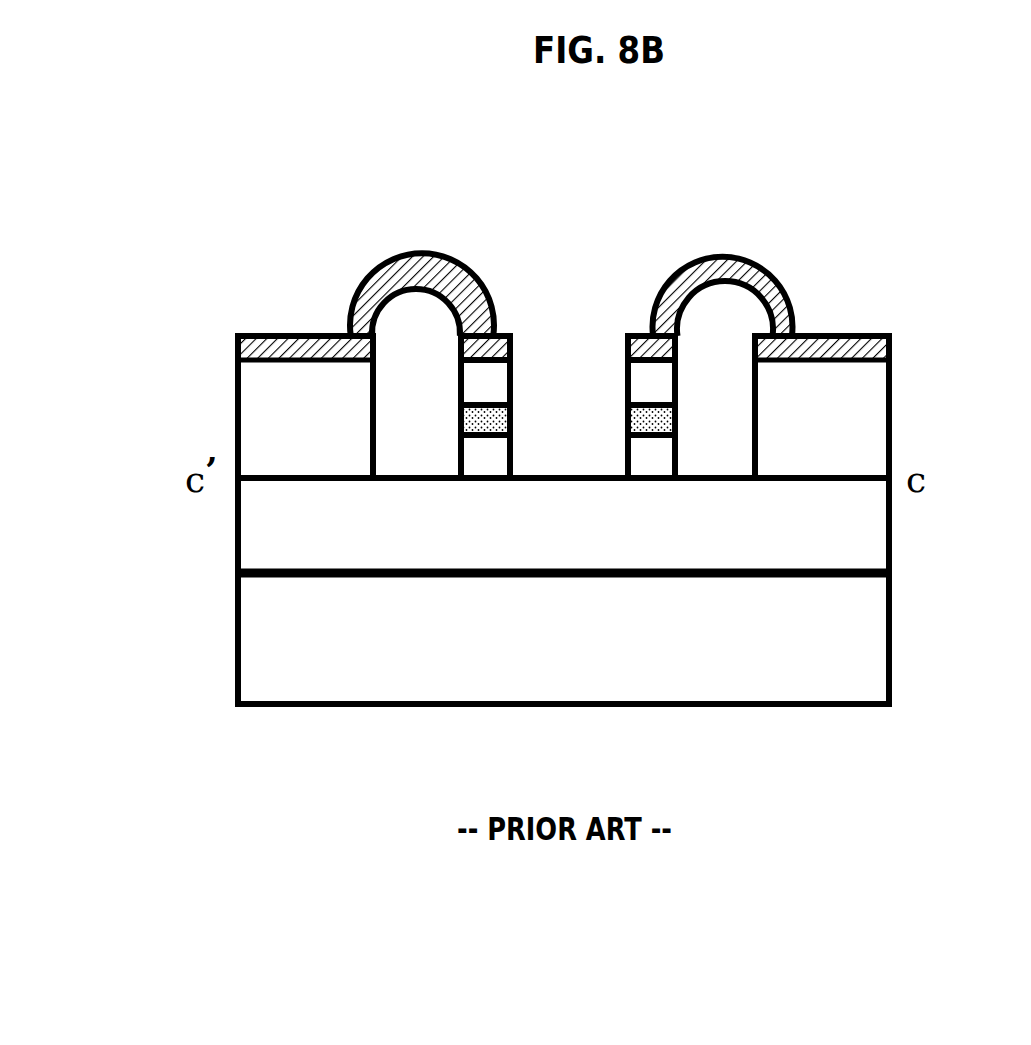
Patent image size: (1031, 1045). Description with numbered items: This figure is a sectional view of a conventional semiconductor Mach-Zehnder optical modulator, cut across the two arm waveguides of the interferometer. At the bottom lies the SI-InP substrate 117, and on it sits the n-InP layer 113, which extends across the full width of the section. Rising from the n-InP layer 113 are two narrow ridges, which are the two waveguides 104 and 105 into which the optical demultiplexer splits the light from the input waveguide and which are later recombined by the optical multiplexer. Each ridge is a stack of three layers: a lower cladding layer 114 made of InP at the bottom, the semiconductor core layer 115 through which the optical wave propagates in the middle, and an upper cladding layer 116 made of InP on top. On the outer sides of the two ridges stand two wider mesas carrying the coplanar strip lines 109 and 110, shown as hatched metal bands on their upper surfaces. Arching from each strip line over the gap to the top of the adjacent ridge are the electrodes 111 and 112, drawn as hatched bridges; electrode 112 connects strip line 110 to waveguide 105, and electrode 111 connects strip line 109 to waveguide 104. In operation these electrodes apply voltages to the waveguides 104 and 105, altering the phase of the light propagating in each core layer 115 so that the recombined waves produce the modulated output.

The waveguide 104 is at (677, 268).
The waveguide 105 is at (508, 268).
The coplanar strip line 109 is at (838, 331).
The coplanar strip line 110 is at (260, 332).
The electrode 111 is at (752, 280).
The electrode 112 is at (398, 276).
The n-InP layer 113 is at (870, 530).
The lower cladding layer 114 is at (640, 455).
The semiconductor core layer 115 is at (495, 415).
The upper cladding layer 116 is at (645, 388).
The SI-InP substrate 117 is at (877, 638).